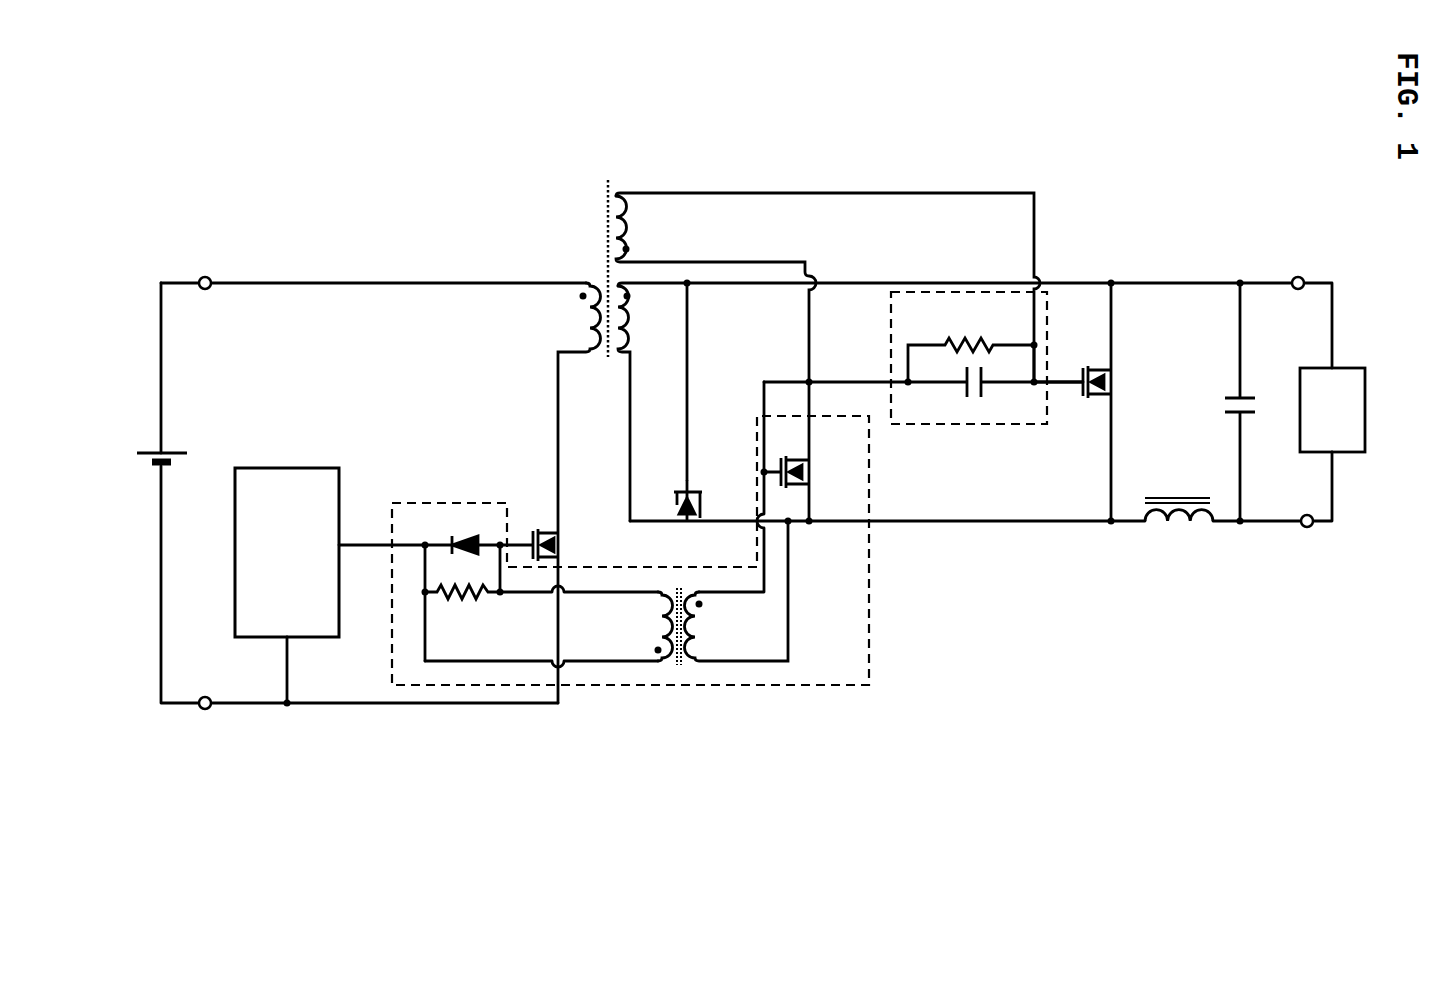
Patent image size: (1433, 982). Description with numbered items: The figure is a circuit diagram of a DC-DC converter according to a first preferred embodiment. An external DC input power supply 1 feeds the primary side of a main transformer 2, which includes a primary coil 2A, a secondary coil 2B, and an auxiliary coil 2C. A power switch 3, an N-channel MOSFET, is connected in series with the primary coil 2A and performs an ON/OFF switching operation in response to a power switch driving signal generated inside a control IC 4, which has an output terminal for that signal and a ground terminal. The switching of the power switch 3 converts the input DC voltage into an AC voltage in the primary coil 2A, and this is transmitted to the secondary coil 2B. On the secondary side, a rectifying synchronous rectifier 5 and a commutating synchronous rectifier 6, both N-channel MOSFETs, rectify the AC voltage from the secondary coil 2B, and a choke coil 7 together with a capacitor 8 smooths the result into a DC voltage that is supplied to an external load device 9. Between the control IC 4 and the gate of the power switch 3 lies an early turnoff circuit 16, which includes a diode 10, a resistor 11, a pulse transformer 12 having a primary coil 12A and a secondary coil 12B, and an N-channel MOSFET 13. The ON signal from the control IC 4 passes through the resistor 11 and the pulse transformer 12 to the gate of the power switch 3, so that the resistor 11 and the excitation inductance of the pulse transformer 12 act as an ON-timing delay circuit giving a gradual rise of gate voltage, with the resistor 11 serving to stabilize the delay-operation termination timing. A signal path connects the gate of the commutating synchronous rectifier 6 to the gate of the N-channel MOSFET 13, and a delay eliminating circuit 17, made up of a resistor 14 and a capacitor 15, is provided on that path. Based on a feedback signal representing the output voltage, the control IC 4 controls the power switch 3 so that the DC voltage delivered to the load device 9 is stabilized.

The DC input power supply 1 is at (157, 452).
The main transformer 2 is at (616, 178).
The primary coil 2A is at (590, 320).
The secondary coil 2B is at (626, 320).
The auxiliary coil 2C is at (626, 230).
The power switch 3 is at (560, 548).
The control IC 4 is at (297, 468).
The rectifying synchronous rectifier 5 is at (683, 490).
The commutating synchronous rectifier 6 is at (1116, 384).
The choke coil 7 is at (1176, 498).
The capacitor 8 is at (1232, 398).
The load device 9 is at (1340, 368).
The diode 10 is at (452, 540).
The resistor 11 is at (470, 600).
The pulse transformer 12 is at (678, 588).
The primary coil 12A is at (664, 630).
The secondary coil 12B is at (692, 630).
The N-channel MOSFET 13 is at (812, 478).
The resistor 14 is at (984, 346).
The capacitor 15 is at (970, 398).
The early turnoff circuit 16 is at (437, 503).
The delay eliminating circuit 17 is at (960, 425).